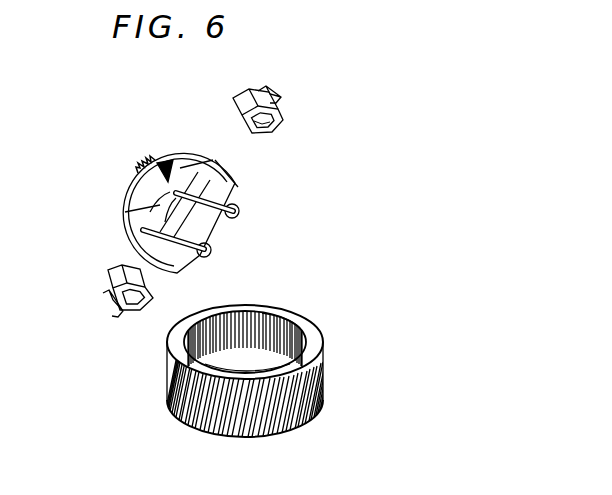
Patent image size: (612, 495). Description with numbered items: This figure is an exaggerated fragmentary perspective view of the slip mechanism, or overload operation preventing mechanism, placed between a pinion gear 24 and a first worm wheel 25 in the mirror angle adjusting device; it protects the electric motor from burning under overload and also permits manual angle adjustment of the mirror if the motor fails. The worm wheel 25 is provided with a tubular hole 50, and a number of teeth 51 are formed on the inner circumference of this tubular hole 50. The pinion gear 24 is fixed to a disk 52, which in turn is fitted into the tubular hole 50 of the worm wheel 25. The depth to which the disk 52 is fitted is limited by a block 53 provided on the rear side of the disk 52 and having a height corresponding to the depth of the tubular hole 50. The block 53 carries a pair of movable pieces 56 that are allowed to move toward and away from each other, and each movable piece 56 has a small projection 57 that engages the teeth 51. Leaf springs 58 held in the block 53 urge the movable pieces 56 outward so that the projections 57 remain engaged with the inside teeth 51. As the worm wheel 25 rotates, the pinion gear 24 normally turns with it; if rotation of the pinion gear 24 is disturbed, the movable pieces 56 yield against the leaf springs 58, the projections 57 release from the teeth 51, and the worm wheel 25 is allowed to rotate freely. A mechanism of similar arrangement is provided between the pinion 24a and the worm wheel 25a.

The pinion gear 24 is at (97, 149).
The pinion gear 24a is at (143, 166).
The first worm wheel 25 is at (300, 358).
The first worm wheel 25a is at (251, 371).
The tubular hole 50 is at (242, 360).
The teeth 51 is at (275, 330).
The disk 52 is at (170, 199).
The block 53 is at (158, 203).
The movable piece 56 is at (287, 119).
The small projection 57 is at (270, 93).
The leaf spring 58 is at (206, 222).